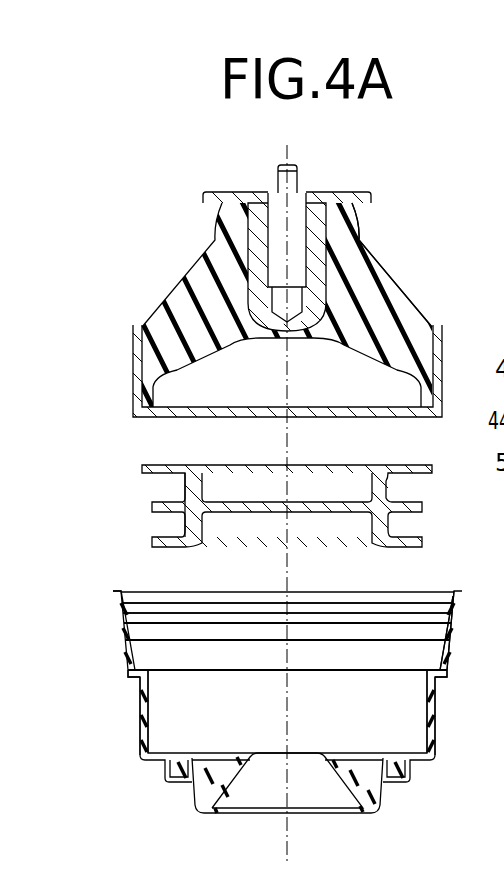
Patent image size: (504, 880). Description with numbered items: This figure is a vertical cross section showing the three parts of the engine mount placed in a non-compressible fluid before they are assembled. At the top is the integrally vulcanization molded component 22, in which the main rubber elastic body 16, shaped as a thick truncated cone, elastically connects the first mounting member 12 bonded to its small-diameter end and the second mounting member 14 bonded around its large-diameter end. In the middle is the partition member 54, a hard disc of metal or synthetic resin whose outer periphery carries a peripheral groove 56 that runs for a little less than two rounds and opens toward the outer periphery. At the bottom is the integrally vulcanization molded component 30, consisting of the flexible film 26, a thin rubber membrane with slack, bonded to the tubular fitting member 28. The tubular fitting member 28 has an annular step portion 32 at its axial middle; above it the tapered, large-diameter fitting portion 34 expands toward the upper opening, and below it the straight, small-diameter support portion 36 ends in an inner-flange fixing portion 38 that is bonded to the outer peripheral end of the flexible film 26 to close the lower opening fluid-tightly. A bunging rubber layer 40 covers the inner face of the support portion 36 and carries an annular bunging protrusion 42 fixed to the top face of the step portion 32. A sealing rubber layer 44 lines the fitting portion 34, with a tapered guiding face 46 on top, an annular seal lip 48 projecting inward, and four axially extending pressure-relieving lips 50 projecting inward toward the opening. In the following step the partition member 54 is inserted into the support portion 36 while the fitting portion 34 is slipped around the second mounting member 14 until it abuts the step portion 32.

The first mounting member 12 is at (323, 185).
The second mounting member 14 is at (135, 331).
The main rubber elastic body 16 is at (219, 269).
The integrally vulcanization molded component 22 is at (396, 275).
The flexible film 26 is at (227, 787).
The tubular fitting member 28 is at (461, 609).
The integrally vulcanization molded component 30 is at (385, 796).
The step portion 32 is at (436, 677).
The fitting portion 34 is at (458, 633).
The support portion 36 is at (434, 717).
The fixing portion 38 is at (412, 763).
The bunging rubber layer 40 is at (140, 738).
The bunging protrusion 42 is at (140, 674).
The sealing rubber layer 44 is at (123, 615).
The guiding face 46 is at (127, 603).
The seal lip 48 is at (133, 627).
The pressure-relieving lip 50 is at (127, 647).
The partition member 54 is at (405, 465).
The peripheral groove 56 is at (183, 492).